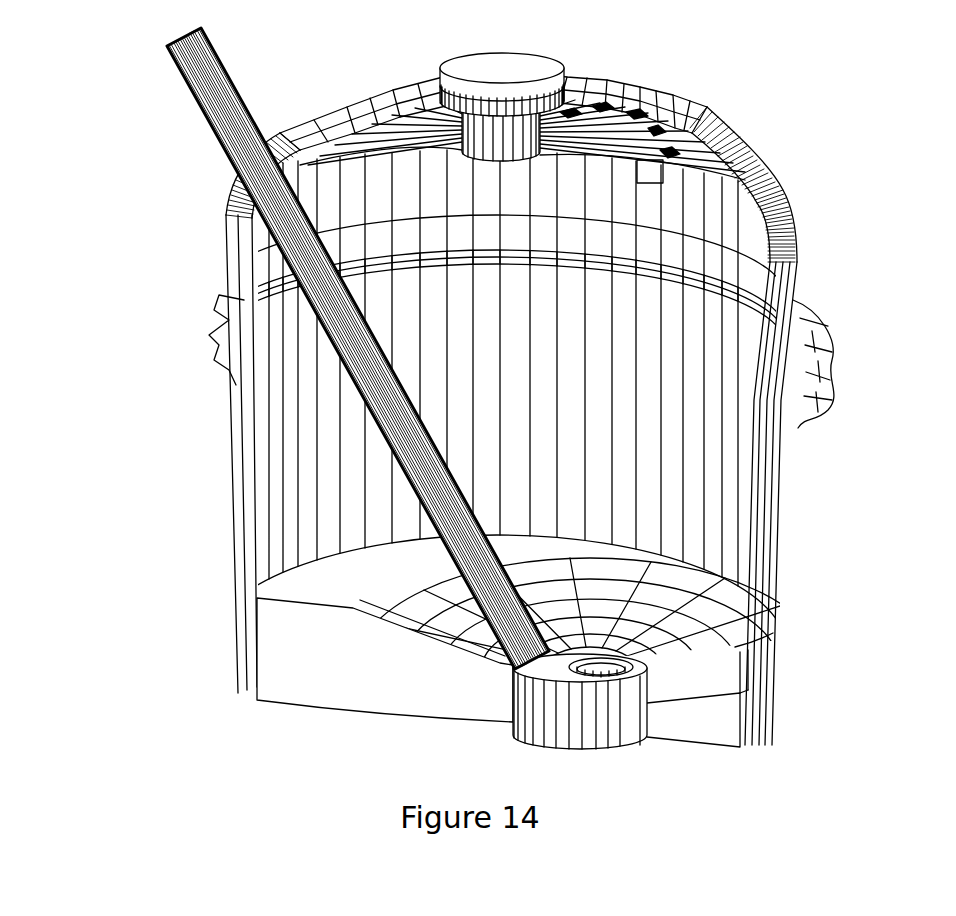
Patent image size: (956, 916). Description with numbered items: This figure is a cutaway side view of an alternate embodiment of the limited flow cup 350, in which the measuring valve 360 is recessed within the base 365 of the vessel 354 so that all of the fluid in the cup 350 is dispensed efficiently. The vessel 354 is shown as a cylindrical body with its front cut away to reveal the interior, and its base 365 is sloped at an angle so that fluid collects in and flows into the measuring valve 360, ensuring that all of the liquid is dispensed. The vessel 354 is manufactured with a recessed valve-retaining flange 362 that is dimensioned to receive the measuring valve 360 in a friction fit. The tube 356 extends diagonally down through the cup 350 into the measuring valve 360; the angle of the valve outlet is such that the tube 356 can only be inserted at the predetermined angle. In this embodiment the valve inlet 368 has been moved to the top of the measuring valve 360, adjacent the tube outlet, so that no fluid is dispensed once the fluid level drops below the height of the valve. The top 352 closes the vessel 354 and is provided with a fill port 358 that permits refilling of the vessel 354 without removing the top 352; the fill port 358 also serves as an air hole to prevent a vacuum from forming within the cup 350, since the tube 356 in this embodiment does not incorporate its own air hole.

The limited flow cup 350 is at (190, 453).
The top 352 is at (806, 241).
The vessel 354 is at (785, 427).
The tube 356 is at (193, 98).
The fill port 358 is at (503, 68).
The measuring valve 360 is at (577, 742).
The valve-retaining flange 362 is at (623, 705).
The base 365 is at (353, 708).
The valve inlet 368 is at (747, 657).